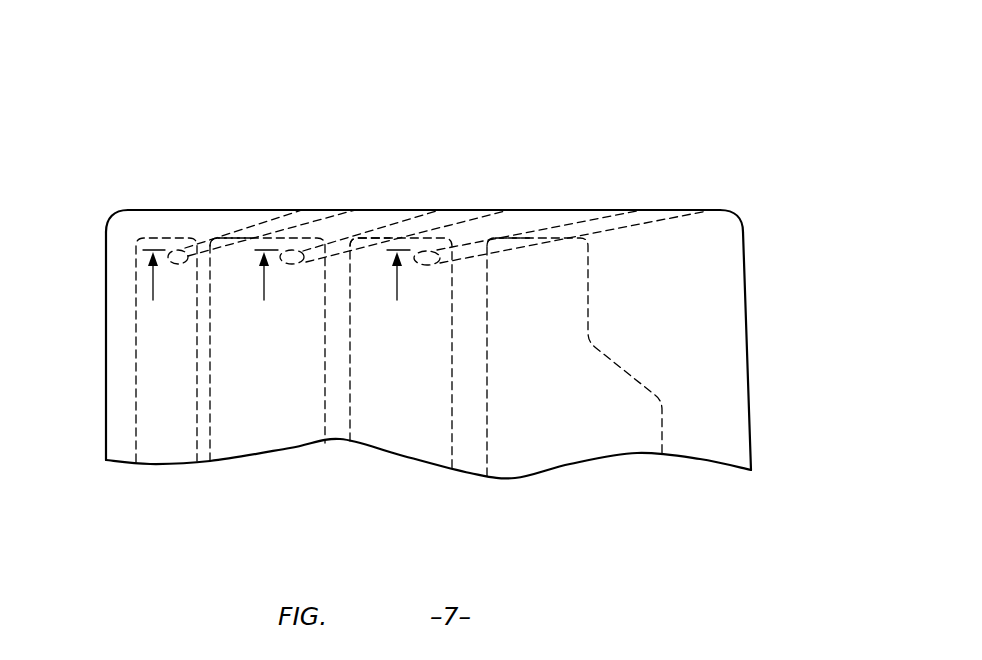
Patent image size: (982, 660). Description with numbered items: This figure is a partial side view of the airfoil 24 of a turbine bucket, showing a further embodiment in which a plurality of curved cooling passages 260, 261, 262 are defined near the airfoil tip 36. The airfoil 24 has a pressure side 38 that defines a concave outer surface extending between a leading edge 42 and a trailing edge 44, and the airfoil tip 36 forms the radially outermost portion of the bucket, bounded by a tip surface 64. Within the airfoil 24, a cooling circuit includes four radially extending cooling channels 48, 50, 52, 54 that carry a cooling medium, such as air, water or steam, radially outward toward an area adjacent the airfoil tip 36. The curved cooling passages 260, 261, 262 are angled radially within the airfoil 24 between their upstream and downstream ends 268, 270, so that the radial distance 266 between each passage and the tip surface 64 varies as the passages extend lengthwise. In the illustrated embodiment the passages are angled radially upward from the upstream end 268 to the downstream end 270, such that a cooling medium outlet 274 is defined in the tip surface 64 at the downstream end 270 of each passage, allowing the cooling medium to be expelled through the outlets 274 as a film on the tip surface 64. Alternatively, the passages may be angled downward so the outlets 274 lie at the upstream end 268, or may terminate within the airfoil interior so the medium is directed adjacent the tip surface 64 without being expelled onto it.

The airfoil 24 is at (428, 266).
The airfoil tip 36 is at (547, 209).
The pressure side 38 is at (393, 430).
The leading edge 42 is at (105, 298).
The trailing edge 44 is at (747, 334).
The cooling channel 48 is at (137, 430).
The cooling channel 50 is at (212, 432).
The cooling channel 52 is at (453, 442).
The cooling channel 54 is at (663, 427).
The tip surface 64 is at (215, 210).
The curved cooling passage 260 is at (229, 247).
The curved cooling passage 261 is at (365, 249).
The curved cooling passage 262 is at (526, 250).
The radial distance 266 is at (152, 210).
The upstream end 268 is at (186, 268).
The downstream end 270 is at (292, 212).
The cooling medium outlet 274 is at (330, 210).